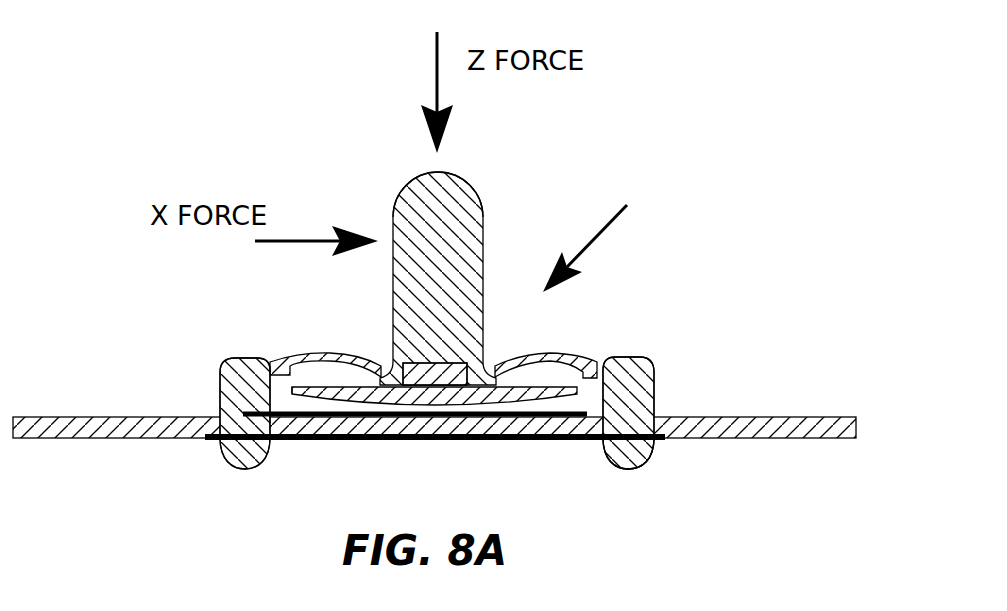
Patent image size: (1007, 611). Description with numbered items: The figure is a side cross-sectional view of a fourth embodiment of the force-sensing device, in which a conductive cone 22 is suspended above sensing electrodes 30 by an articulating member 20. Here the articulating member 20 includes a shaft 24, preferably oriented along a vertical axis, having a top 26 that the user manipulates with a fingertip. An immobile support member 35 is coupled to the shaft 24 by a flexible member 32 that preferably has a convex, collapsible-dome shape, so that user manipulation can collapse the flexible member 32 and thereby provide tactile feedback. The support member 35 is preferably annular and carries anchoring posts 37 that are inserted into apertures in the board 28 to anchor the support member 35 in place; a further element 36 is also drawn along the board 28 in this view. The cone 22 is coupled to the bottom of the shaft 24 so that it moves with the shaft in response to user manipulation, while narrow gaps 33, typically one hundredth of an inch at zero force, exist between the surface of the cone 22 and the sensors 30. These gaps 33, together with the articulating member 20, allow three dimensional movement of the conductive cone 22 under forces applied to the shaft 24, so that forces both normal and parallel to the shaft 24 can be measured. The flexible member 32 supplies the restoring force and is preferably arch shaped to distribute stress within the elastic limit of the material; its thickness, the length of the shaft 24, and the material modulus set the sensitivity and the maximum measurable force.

The articulating member 20 is at (597, 233).
The conductive cone 22 is at (533, 365).
The shaft 24 is at (483, 222).
The top 26 is at (410, 183).
The board 28 is at (810, 415).
The sensing electrodes 30 is at (267, 413).
The housing cover 32 is at (325, 355).
The narrow gaps 33 is at (290, 402).
The immobile support member 35 is at (652, 396).
The lower conductive trace 36 is at (473, 440).
The anchoring posts 37 is at (640, 460).